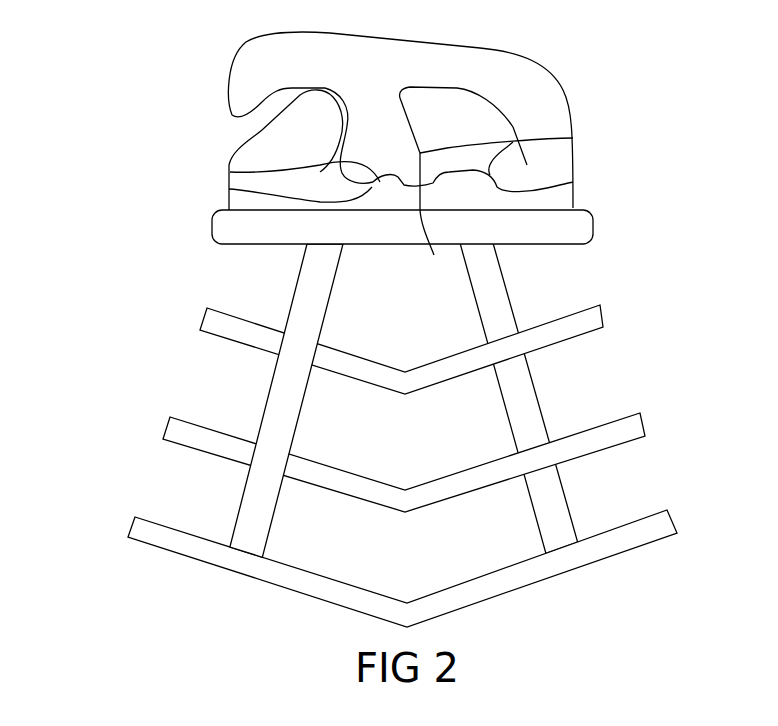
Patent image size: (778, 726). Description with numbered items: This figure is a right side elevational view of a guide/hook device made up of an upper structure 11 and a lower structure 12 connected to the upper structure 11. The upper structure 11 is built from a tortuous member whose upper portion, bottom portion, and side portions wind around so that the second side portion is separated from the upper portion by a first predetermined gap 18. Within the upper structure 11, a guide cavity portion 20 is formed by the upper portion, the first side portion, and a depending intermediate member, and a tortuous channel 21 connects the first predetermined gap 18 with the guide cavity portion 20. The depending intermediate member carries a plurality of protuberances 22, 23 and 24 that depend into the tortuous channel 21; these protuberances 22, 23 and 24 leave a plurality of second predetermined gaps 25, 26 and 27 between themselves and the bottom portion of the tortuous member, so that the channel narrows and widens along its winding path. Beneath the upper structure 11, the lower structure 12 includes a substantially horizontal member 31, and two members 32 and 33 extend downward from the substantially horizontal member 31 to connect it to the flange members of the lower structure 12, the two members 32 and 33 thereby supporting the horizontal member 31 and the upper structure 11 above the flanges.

The upper structure 11 is at (588, 100).
The lower structure 12 is at (122, 418).
The first predetermined gap 18 is at (325, 88).
The guide cavity portion 20 is at (457, 100).
The tortuous channel 21 is at (315, 158).
The protuberance 22 is at (230, 172).
The protuberance 23 is at (420, 153).
The protuberance 24 is at (573, 138).
The second predetermined gap 25 is at (229, 189).
The second predetermined gap 26 is at (434, 255).
The second predetermined gap 27 is at (573, 182).
The substantially horizontal member 31 is at (222, 228).
The member 32 is at (273, 408).
The member 33 is at (528, 397).